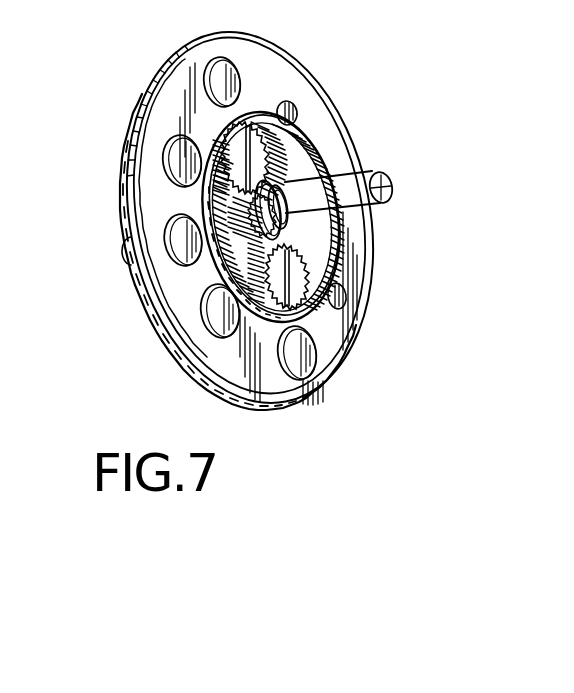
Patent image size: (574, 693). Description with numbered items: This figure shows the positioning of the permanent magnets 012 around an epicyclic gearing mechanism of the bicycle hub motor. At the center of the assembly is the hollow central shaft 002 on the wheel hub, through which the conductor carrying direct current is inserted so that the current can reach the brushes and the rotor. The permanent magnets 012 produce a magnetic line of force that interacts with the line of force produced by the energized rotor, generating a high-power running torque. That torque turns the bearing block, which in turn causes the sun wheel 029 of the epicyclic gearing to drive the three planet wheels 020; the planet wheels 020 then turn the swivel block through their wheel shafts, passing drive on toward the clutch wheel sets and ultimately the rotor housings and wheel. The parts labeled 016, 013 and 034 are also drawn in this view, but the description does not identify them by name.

The carrier disc rim 016 is at (246, 47).
The carrier plate face 013 is at (263, 82).
The permanent magnets 012 is at (300, 118).
The planet wheels 020 is at (250, 160).
The hollow central shaft 002 is at (393, 188).
The sun wheel 029 is at (343, 277).
The lower planet gear 034 is at (310, 310).